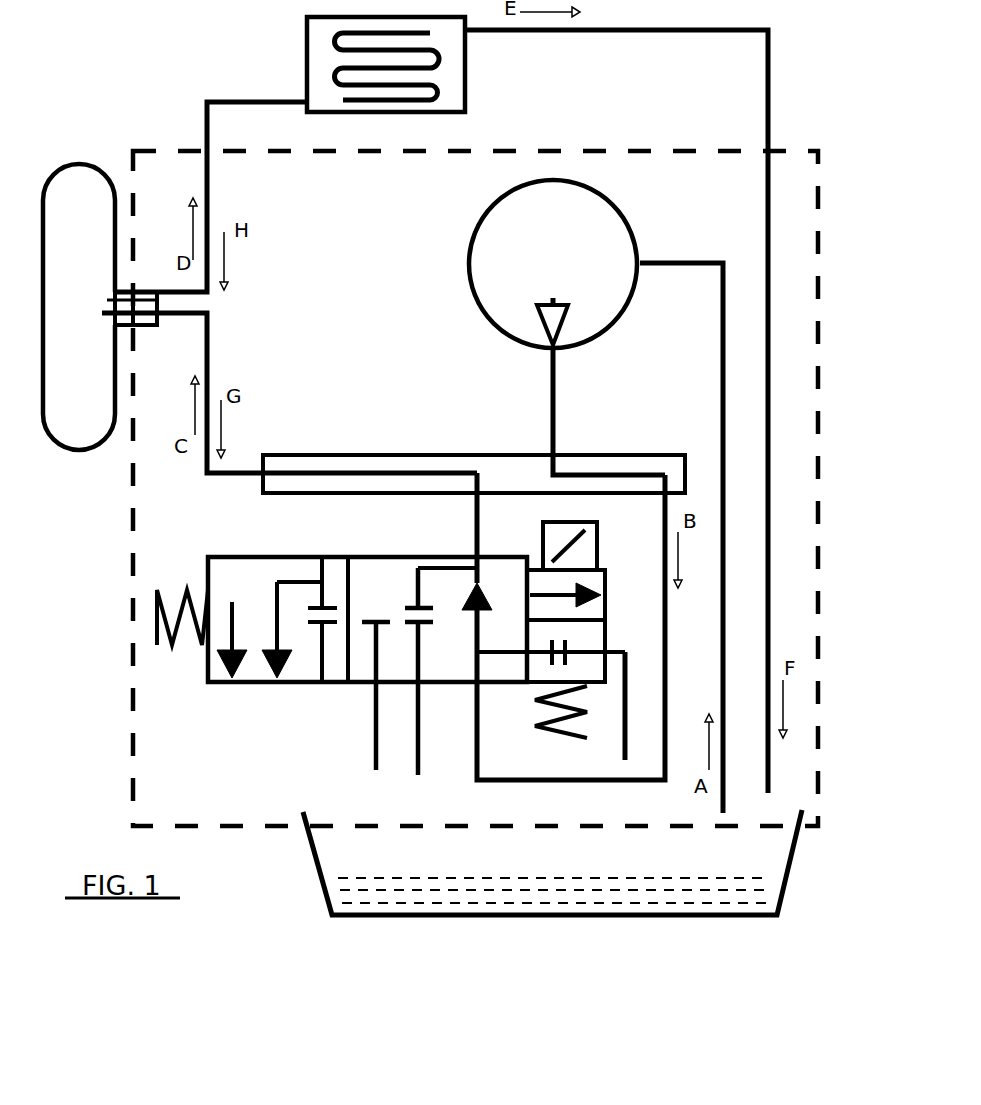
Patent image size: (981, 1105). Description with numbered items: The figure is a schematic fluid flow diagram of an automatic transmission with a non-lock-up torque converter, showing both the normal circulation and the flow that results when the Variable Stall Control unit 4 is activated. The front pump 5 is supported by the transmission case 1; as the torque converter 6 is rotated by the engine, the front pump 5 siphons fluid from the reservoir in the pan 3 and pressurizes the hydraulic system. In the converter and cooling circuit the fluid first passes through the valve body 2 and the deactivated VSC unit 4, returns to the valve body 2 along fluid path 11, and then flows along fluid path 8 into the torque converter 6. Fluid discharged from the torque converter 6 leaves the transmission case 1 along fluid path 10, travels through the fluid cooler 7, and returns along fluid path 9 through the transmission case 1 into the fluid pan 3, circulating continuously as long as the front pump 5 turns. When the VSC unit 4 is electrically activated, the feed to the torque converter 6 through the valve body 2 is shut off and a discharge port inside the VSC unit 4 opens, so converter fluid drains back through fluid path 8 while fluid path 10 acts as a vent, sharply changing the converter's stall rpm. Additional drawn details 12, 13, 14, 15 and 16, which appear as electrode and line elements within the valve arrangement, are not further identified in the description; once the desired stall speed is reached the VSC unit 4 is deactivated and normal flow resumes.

The transmission case 1 is at (552, 152).
The valve body 2 is at (385, 468).
The pan 3 is at (592, 915).
The VSC unit 4 is at (347, 688).
The front pump 5 is at (497, 278).
The torque converter 6 is at (83, 428).
The fluid cooler 7 is at (318, 92).
The fluid path 8 is at (210, 370).
The fluid path 9 is at (770, 123).
The fluid path 10 is at (208, 222).
The fluid path 11 is at (473, 532).
The electrode 12 is at (420, 748).
The electrode 13 is at (372, 748).
The return line 14 is at (667, 663).
The control line 15 is at (628, 748).
The solenoid valve 16 is at (610, 635).